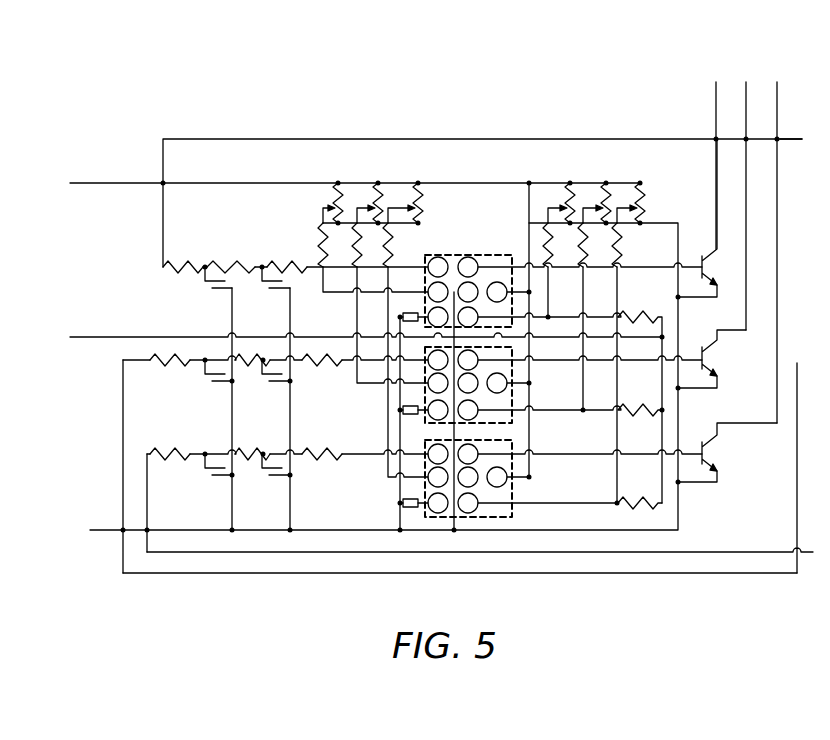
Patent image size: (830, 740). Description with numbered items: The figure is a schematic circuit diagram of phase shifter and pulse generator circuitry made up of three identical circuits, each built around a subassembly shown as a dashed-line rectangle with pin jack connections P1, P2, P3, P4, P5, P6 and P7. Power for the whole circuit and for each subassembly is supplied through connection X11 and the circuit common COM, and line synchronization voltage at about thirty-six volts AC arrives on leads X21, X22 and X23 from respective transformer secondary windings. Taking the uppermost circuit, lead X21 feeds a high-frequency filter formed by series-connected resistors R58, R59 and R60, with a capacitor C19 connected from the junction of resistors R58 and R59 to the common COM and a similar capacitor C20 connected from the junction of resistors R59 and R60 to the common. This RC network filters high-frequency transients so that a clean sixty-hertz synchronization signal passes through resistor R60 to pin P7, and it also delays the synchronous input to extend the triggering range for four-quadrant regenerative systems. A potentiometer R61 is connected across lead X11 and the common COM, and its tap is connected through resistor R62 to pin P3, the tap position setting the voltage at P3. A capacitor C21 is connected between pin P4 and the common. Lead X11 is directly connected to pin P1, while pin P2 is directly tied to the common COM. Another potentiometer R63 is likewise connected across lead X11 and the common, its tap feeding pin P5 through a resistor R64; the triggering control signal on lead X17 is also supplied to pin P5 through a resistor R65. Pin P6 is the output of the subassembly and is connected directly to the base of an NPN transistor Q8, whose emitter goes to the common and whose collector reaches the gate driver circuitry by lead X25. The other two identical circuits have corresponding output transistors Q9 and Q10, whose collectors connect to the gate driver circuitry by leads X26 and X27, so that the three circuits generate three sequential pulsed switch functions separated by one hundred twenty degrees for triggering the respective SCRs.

The power supply connection X11 is at (75, 184).
The triggering control signal connection X17 is at (77, 332).
The line synchronization lead X21 is at (800, 139).
The line synchronization lead X22 is at (810, 363).
The line synchronization lead X23 is at (801, 568).
The gate driver lead X25 is at (716, 84).
The gate driver connection X26 is at (746, 84).
The gate driver connection X27 is at (777, 89).
The circuit common COM is at (700, 208).
The resistor R58 is at (180, 260).
The resistor R59 is at (231, 258).
The resistor R60 is at (303, 262).
The potentiometer R61 is at (336, 192).
The resistor R62 is at (321, 230).
The potentiometer R63 is at (554, 190).
The resistor R64 is at (563, 247).
The resistor R65 is at (664, 296).
The capacitor C19 is at (216, 299).
The capacitor C20 is at (275, 296).
The capacitor C21 is at (403, 314).
The NPN transistor Q8 is at (707, 218).
The output transistor Q9 is at (712, 355).
The output transistor Q10 is at (712, 452).
The pin connection P1 is at (497, 384).
The pin connection P2 is at (468, 384).
The pin connection P3 is at (438, 384).
The pin connection P4 is at (438, 410).
The pin connection P5 is at (468, 410).
The pin connection P6 is at (468, 360).
The pin connection P7 is at (438, 360).